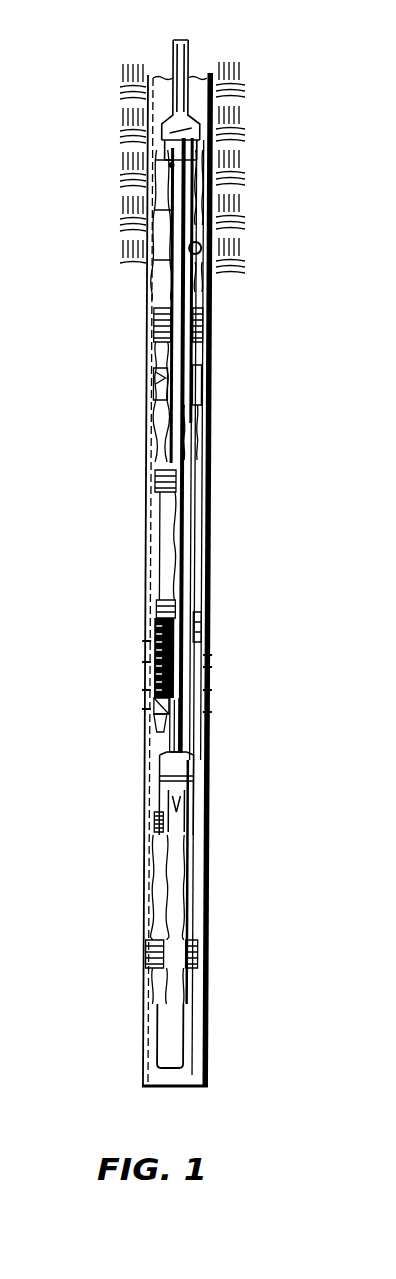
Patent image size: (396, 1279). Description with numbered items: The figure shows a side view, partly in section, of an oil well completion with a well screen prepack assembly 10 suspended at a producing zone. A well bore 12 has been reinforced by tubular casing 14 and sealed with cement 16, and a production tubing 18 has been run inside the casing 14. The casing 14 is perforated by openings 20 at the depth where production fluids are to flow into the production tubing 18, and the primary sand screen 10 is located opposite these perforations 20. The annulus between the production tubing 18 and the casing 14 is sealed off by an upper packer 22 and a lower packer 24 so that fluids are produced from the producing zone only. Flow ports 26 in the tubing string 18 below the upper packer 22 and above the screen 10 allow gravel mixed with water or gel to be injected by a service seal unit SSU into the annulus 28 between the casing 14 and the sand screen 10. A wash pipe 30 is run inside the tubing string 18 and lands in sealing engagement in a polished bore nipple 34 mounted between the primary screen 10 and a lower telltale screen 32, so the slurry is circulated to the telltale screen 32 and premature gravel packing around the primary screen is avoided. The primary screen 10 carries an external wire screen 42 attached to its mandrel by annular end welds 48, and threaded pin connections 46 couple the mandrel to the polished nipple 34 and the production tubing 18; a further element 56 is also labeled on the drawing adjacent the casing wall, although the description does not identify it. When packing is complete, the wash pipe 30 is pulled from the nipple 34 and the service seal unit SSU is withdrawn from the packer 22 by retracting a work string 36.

The well screen prepack assembly 10 is at (152, 632).
The well bore 12 is at (222, 128).
The tubular casing 14 is at (233, 157).
The cement 16 is at (145, 100).
The production tubing 18 is at (192, 507).
The openings 20 is at (150, 663).
The upper packer 22 is at (153, 327).
The lower packer 24 is at (148, 955).
The flow ports 26 is at (152, 382).
The annulus 28 is at (157, 520).
The wash pipe 30 is at (183, 562).
The telltale screen 32 is at (150, 822).
The polished bore nipple 34 is at (208, 742).
The work string 36 is at (188, 50).
The external screen 42 is at (203, 627).
The threaded pin connection 46 is at (155, 718).
The annular end welds 48 is at (158, 720).
The annulus 56 is at (213, 676).
The service seal unit SSU is at (152, 205).